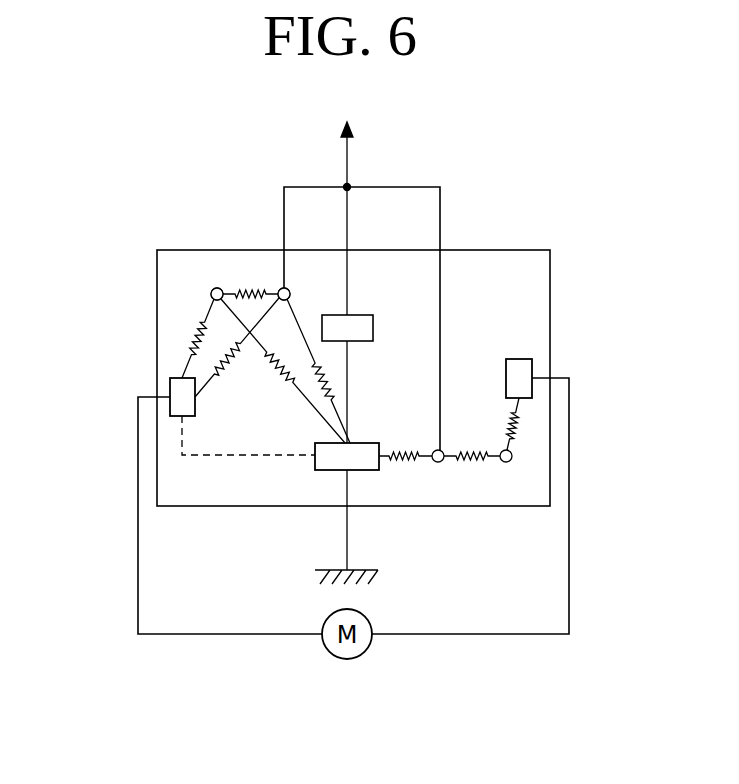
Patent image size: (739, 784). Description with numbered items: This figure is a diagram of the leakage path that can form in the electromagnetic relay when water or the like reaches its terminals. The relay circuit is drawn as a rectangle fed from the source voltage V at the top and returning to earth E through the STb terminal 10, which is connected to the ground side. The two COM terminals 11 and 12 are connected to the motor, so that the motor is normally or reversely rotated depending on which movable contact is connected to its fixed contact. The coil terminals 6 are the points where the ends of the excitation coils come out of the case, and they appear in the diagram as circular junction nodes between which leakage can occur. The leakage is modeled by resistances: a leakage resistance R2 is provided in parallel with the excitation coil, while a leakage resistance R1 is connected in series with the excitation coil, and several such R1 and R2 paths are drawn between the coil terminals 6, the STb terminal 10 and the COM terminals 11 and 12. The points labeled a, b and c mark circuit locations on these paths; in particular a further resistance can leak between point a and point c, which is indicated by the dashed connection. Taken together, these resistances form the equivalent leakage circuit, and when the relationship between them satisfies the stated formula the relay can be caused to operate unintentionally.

The coil terminal 6 is at (216, 288).
The STb terminal 10 is at (321, 471).
The COM terminal 11 is at (533, 370).
The COM terminal 12 is at (168, 386).
The leakage resistance R1 is at (192, 342).
The leakage resistance R2 is at (250, 290).
The point a is at (286, 288).
The point b is at (212, 291).
The point c is at (168, 408).
The source voltage V is at (347, 330).
The earth E is at (358, 574).